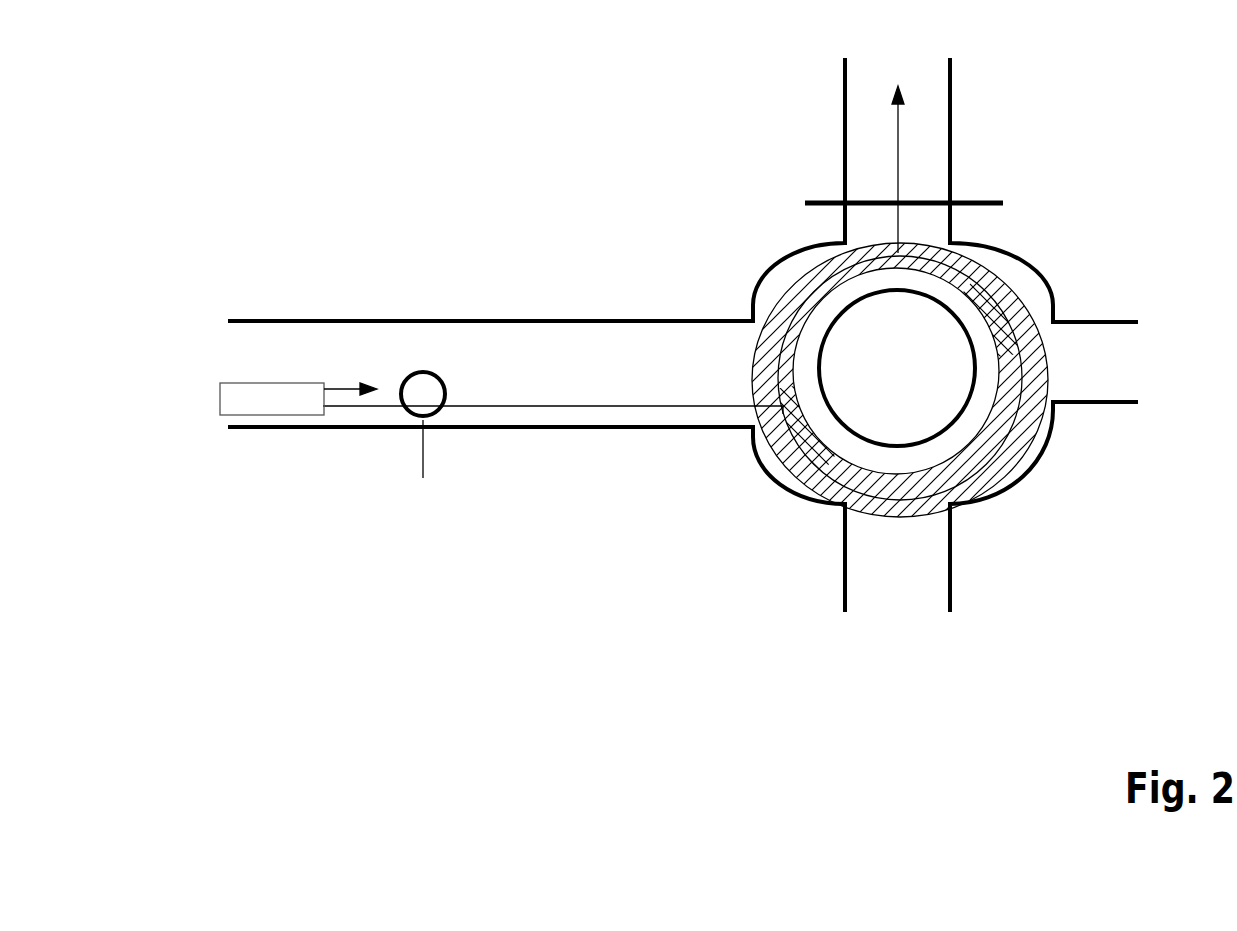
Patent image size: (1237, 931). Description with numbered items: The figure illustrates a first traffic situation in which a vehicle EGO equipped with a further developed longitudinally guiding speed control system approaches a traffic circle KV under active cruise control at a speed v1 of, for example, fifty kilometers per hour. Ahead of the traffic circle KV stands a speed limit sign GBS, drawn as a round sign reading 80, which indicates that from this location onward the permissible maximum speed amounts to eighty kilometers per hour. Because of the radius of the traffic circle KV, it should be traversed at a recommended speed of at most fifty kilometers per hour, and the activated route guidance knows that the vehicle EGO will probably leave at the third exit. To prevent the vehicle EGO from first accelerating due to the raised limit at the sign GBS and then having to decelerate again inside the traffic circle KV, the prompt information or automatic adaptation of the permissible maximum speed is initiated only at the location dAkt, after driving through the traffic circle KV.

The vehicle EGO is at (272, 400).
The speed v1 is at (350, 373).
The speed limit sign 80 is at (423, 478).
The speed limit sign GBS is at (417, 473).
The traffic circle KV is at (1018, 473).
The location dAkt is at (975, 200).